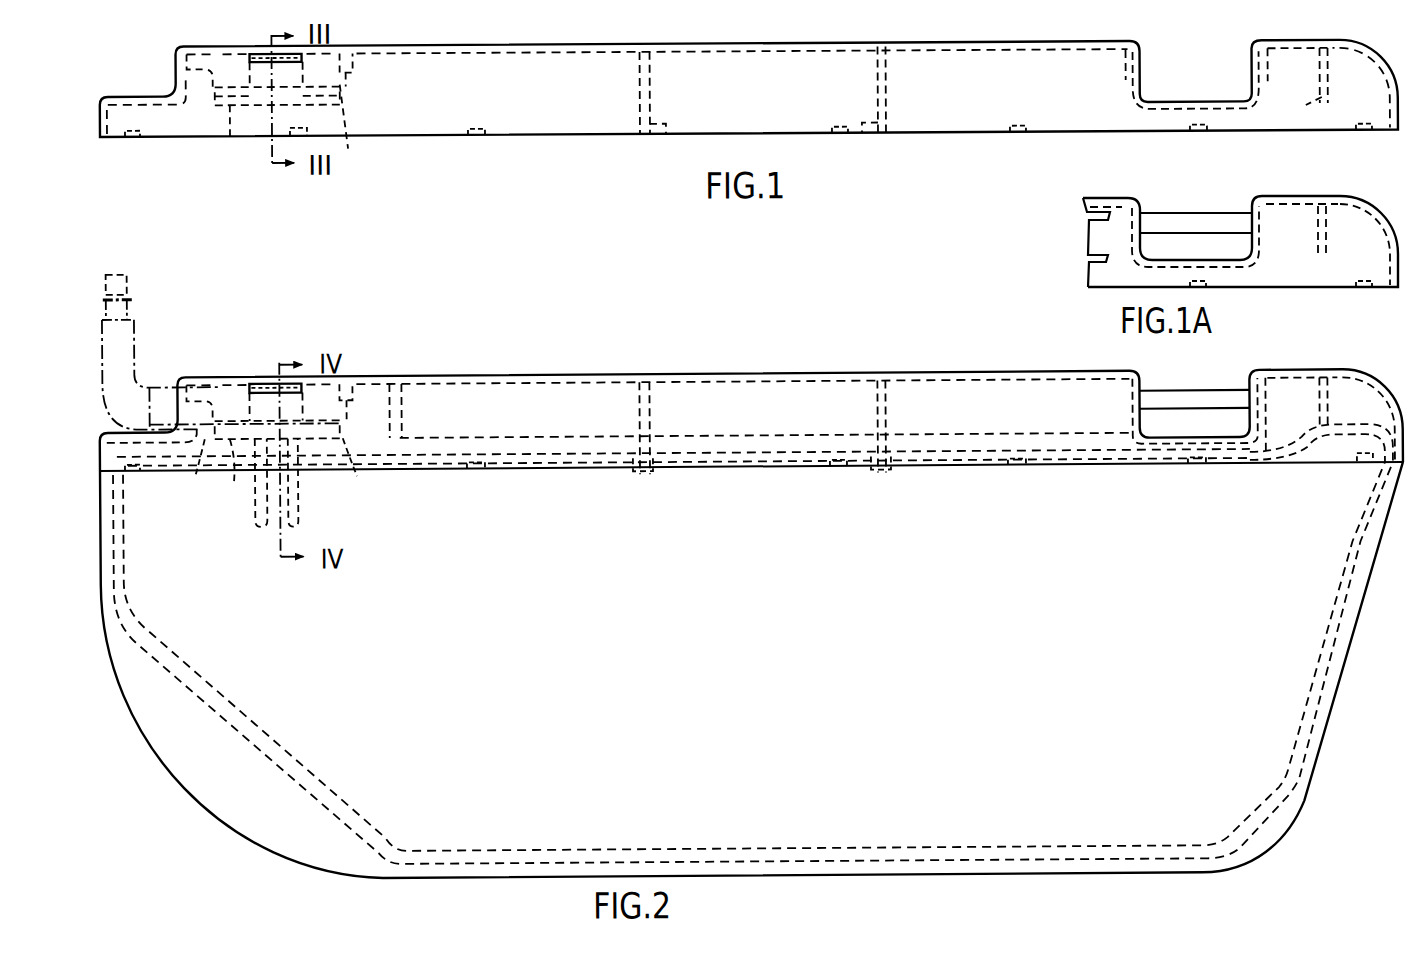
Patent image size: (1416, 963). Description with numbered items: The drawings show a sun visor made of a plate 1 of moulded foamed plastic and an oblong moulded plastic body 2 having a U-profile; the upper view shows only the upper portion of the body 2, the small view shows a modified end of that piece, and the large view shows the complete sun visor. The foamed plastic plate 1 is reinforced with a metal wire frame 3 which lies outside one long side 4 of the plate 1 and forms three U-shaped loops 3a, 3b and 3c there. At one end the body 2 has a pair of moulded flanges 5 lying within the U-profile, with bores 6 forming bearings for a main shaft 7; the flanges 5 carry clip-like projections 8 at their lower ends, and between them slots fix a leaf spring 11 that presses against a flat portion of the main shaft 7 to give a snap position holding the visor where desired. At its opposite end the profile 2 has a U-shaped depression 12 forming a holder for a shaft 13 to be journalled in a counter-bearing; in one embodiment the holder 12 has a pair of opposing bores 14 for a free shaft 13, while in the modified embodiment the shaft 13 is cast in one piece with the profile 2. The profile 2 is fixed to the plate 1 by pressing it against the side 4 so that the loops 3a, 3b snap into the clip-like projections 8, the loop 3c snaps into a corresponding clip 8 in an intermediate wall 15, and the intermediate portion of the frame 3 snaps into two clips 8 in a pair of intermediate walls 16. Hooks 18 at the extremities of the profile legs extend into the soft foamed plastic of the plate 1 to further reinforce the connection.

In FIG. 2, the plate 1 is at (227, 828).
In FIG. 1, the plastic body 2 is at (561, 53).
In FIG. 1A, the plastic body 2 is at (1388, 220).
In FIG. 2, the plastic body 2 is at (508, 377).
In FIG. 2, the metal wire frame 3 is at (239, 699).
In FIG. 2, the U-shaped loop 3a is at (206, 475).
In FIG. 2, the U-shaped loop 3b is at (357, 476).
In FIG. 2, the U-shaped loop 3c is at (1288, 478).
In FIG. 2, the long side 4 is at (714, 474).
In FIG. 1, the moulded flanges 5 is at (183, 68).
In FIG. 2, the moulded flanges 5 is at (221, 384).
In FIG. 1, the bores 6 is at (212, 91).
In FIG. 2, the bores 6 is at (276, 415).
In FIG. 2, the main shaft 7 is at (130, 343).
In FIG. 1, the clip-like projections 8 is at (230, 139).
In FIG. 2, the clip-like projections 8 is at (235, 480).
In FIG. 1, the leaf spring 11 is at (276, 58).
In FIG. 2, the leaf spring 11 is at (272, 383).
In FIG. 1, the U-shaped depression 12 is at (1186, 109).
In FIG. 1A, the shaft 13 is at (1188, 212).
In FIG. 2, the shaft 13 is at (1196, 397).
In FIG. 1, the opposing bores 14 is at (1141, 80).
In FIG. 1, the intermediate wall 15 is at (1328, 87).
In FIG. 2, the intermediate wall 15 is at (1328, 438).
In FIG. 1, the intermediate walls 16 is at (651, 107).
In FIG. 2, the intermediate walls 16 is at (651, 422).
In FIG. 1, the hooks 18 is at (145, 141).
In FIG. 2, the hooks 18 is at (841, 476).